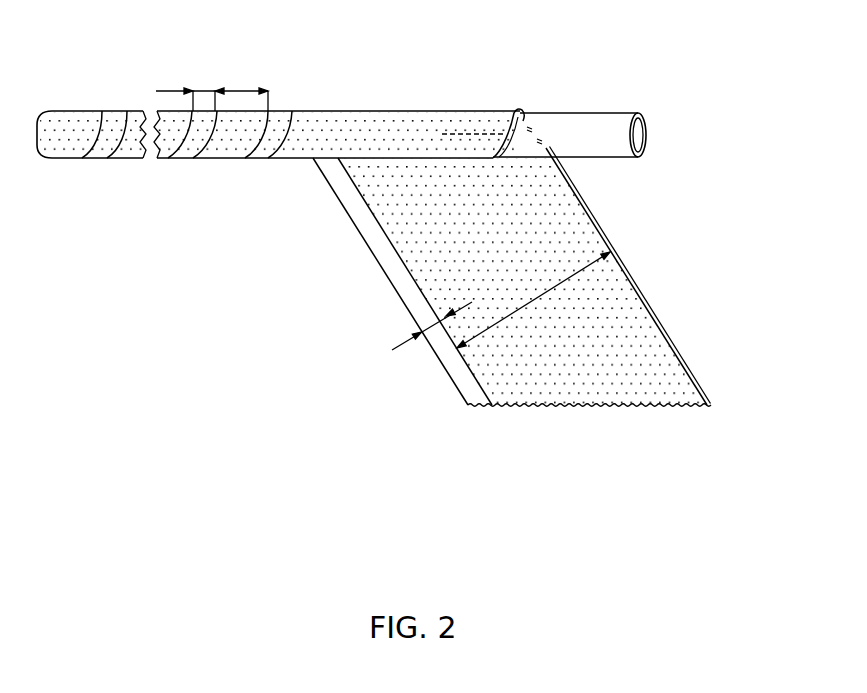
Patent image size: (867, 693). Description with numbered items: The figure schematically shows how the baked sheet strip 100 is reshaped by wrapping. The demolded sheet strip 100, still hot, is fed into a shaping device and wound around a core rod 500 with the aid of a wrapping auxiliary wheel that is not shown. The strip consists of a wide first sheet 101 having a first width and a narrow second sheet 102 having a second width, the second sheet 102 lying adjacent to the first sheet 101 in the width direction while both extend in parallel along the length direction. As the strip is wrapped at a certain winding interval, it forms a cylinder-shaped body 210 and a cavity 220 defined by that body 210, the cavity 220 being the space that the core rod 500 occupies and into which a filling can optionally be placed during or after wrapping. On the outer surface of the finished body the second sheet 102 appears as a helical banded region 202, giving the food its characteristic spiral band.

The sheet strip 100 is at (545, 326).
The first sheet 101 is at (663, 367).
The second sheet 102 is at (465, 384).
The helical banded region 202 is at (112, 120).
The body 210 is at (453, 124).
The cavity 220 is at (508, 135).
The core rod 500 is at (607, 143).